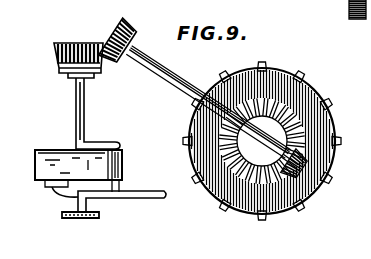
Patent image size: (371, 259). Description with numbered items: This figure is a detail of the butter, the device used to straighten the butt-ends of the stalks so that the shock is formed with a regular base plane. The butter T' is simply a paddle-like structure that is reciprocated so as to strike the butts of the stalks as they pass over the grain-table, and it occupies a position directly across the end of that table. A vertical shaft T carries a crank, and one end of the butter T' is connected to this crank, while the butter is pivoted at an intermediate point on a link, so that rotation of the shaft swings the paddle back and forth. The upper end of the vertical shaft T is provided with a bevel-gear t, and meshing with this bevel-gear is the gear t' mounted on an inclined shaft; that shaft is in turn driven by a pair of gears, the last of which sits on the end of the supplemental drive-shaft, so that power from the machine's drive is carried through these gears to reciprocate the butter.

The bevel-gear t is at (78, 53).
The gear t' is at (118, 34).
The vertical shaft T is at (98, 113).
The butter T' is at (78, 161).